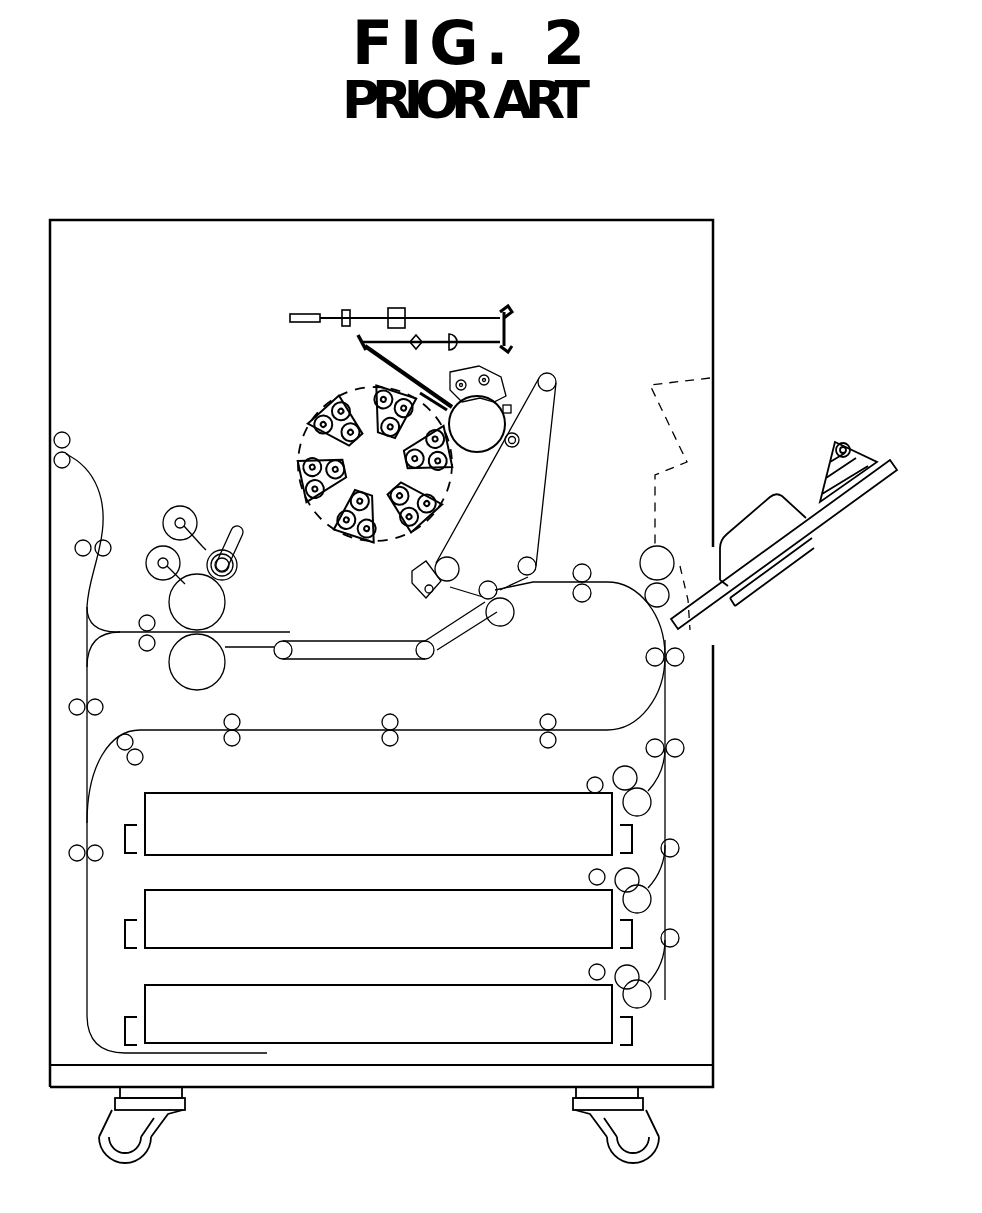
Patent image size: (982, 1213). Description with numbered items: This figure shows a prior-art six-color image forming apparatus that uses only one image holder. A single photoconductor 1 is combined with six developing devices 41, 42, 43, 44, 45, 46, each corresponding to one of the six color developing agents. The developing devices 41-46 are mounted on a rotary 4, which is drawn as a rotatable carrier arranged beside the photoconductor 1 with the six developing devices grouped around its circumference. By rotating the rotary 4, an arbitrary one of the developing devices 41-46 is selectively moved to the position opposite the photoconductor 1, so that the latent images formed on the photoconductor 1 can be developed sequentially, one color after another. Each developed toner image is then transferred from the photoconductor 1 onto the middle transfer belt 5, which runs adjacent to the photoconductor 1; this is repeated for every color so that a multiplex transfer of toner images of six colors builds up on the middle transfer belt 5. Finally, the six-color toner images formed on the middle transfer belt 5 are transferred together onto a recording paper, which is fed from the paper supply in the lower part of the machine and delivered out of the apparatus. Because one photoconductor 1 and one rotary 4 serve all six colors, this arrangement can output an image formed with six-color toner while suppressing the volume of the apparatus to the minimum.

The photoconductor 1 is at (489, 410).
The rotary 4 is at (318, 510).
The middle transfer belt 5 is at (547, 488).
The developing device 41 is at (445, 460).
The developing device 42 is at (408, 532).
The developing device 43 is at (362, 535).
The developing device 44 is at (292, 470).
The developing device 45 is at (318, 420).
The developing device 46 is at (362, 392).